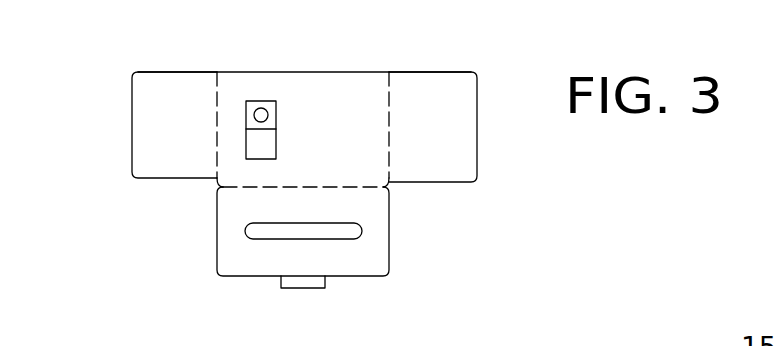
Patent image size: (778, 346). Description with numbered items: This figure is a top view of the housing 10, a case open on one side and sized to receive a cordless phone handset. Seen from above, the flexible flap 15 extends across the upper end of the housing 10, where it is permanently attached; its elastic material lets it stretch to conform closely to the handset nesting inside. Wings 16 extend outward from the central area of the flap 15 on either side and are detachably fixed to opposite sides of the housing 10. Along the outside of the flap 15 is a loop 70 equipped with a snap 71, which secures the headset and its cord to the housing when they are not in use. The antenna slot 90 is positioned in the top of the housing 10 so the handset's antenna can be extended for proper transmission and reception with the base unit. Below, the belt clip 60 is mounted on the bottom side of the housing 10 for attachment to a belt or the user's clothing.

The housing 10 is at (375, 215).
The flexible flap 15 is at (355, 103).
The wings 16 is at (158, 110).
The belt clip 60 is at (333, 285).
The loop 70 is at (246, 153).
The snap 71 is at (240, 98).
The antenna slot 90 is at (272, 229).